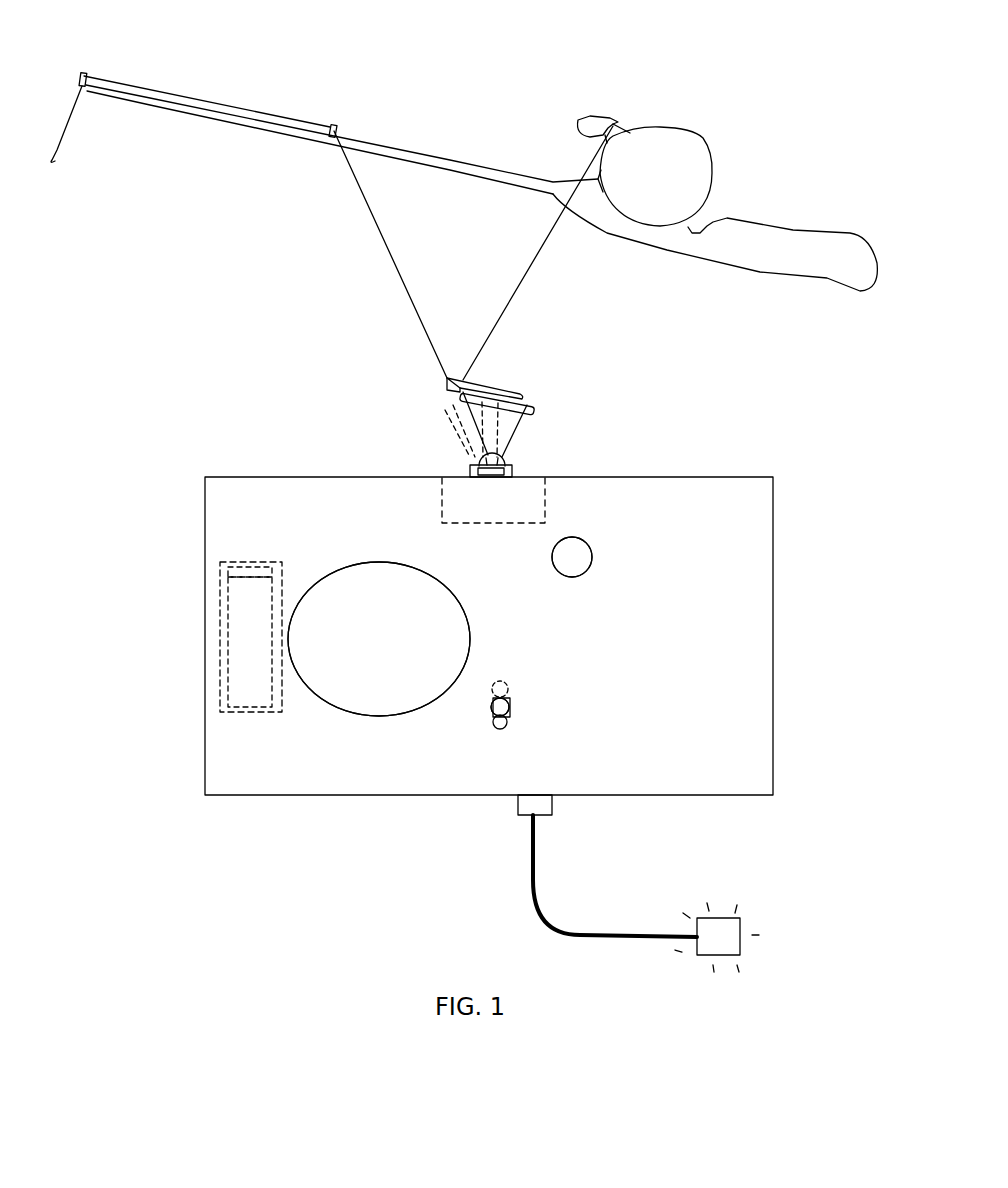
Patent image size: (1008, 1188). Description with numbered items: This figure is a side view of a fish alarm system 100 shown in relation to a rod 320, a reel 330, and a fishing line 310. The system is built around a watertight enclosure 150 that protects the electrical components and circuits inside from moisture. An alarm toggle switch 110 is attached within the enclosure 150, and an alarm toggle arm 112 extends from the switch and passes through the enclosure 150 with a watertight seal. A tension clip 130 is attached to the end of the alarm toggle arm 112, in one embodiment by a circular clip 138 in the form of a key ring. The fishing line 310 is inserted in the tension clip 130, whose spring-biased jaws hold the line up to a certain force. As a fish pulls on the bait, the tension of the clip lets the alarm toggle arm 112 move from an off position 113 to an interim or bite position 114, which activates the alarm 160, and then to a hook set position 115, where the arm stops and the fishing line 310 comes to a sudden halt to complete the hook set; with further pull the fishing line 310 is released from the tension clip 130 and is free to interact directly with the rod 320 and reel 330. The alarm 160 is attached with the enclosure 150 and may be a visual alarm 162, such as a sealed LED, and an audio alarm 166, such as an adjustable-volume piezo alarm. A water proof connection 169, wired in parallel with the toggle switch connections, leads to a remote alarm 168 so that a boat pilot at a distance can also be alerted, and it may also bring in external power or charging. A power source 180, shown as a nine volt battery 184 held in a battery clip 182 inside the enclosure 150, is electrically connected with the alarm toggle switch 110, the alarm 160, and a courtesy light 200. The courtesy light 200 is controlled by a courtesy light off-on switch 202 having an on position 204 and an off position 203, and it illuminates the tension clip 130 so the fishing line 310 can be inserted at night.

The fish alarm system 100 is at (507, 896).
The alarm toggle switch 110 is at (549, 478).
The alarm toggle arm 112 is at (578, 391).
The off position 113 is at (556, 415).
The interim or bite position 114 is at (418, 411).
The hook set position 115 is at (415, 426).
The tension clip 130 is at (516, 337).
The circular clip 138 is at (541, 356).
The enclosure 150 is at (504, 682).
The alarm 160 is at (558, 666).
The visual alarm 162 is at (670, 476).
The audio alarm 166 is at (383, 734).
The remote alarm 168 is at (744, 953).
The water proof connection 169 is at (607, 866).
The power source 180 is at (192, 631).
The battery clip 182 is at (193, 538).
The battery 184 is at (196, 642).
The courtesy light 200 is at (560, 442).
The courtesy light off-on switch 202 is at (598, 797).
The off position 203 is at (568, 790).
The on position 204 is at (679, 716).
The fishing line 310 is at (332, 226).
The rod 320 is at (715, 213).
The reel 330 is at (682, 140).